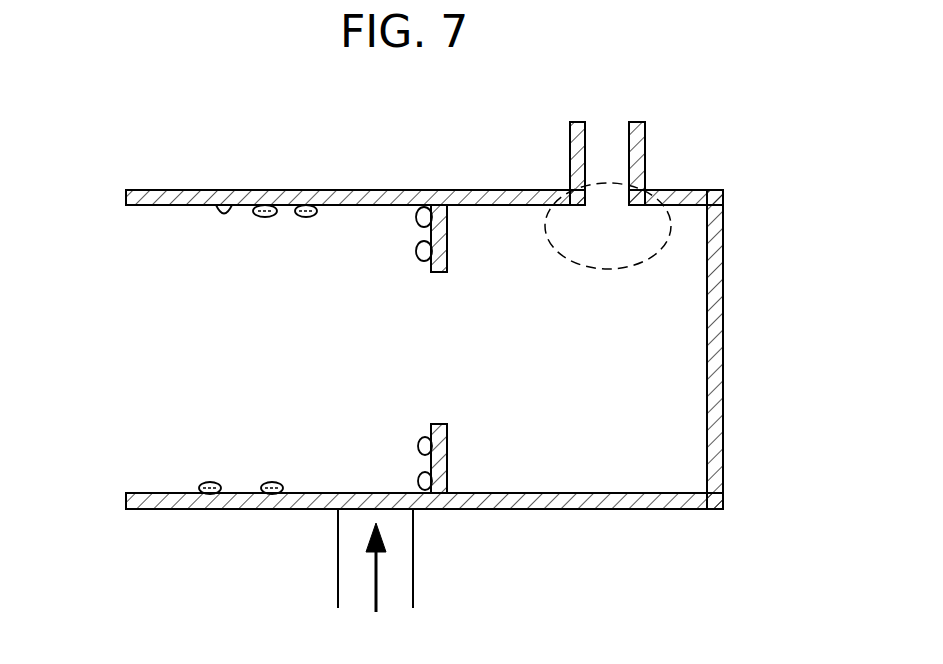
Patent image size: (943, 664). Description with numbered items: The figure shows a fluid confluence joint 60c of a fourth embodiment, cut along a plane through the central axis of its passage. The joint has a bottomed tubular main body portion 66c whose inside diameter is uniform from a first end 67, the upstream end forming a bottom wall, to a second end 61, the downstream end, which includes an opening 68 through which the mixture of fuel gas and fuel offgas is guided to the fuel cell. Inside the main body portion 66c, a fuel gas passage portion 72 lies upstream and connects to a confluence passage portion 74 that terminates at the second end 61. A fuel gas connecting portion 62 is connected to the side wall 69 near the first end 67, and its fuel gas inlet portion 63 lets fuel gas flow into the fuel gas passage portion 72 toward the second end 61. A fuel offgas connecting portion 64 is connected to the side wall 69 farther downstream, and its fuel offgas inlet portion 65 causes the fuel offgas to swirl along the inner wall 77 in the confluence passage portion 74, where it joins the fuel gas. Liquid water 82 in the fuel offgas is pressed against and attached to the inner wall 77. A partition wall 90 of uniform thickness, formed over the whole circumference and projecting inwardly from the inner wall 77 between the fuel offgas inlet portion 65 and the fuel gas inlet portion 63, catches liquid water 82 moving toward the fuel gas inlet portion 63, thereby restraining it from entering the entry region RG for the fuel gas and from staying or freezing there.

The fluid confluence joint 60c is at (700, 118).
The second end 61 is at (126, 498).
The fuel gas connecting portion 62 is at (646, 152).
The fuel gas inlet portion 63 is at (576, 193).
The fuel offgas connecting portion 64 is at (415, 553).
The fuel offgas inlet portion 65 is at (363, 508).
The main body portion 66c is at (316, 150).
The first end 67 is at (724, 345).
The opening 68 is at (125, 447).
The side wall 69 is at (366, 190).
The fuel gas passage portion 72 is at (606, 384).
The confluence passage portion 74 is at (247, 379).
The inner wall 77 is at (222, 206).
The liquid water 82 is at (266, 206).
The partition wall 90 is at (430, 232).
The entry region RG is at (722, 247).